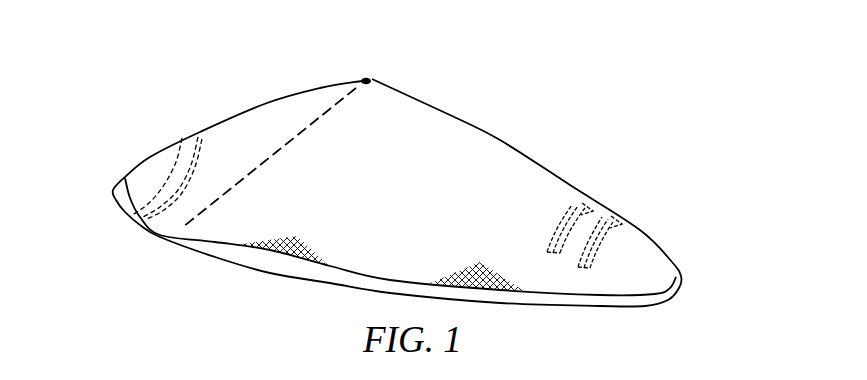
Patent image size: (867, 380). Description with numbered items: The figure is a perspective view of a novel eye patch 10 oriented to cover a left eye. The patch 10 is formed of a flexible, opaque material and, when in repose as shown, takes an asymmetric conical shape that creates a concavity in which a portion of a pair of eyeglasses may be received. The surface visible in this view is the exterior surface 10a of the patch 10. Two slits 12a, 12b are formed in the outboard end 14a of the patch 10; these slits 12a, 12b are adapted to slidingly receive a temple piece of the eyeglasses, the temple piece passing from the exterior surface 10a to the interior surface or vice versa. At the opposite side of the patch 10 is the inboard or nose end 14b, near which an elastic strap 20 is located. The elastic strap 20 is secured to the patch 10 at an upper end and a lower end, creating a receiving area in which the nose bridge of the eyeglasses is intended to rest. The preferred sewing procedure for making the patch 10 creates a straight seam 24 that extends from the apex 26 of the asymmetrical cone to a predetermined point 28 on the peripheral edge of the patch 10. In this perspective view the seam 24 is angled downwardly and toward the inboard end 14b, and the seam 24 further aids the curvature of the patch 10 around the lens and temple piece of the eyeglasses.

The eye patch 10 is at (539, 74).
The exterior surface 10a is at (410, 151).
The slit 12a is at (562, 224).
The slit 12b is at (577, 263).
The outboard end 14a is at (680, 280).
The inboard/nose end 14b is at (124, 182).
The elastic strap 20 is at (182, 162).
The straight seam 24 is at (294, 140).
The apex 26 is at (363, 76).
The predetermined point 28 is at (162, 235).